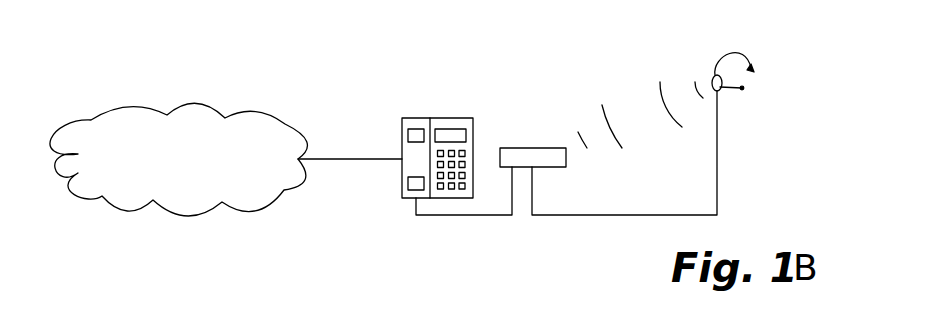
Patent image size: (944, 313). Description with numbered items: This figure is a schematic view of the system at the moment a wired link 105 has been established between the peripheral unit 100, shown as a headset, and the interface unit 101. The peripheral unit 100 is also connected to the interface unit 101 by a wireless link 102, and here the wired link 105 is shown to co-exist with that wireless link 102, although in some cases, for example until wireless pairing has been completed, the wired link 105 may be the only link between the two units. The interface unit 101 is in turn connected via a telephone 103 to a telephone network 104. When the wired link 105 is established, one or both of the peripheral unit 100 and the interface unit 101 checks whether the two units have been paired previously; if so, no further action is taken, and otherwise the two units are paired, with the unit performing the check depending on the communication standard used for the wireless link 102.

The peripheral unit 100 is at (767, 61).
The interface unit 101 is at (521, 158).
The wireless link 102 is at (617, 124).
The telephone 103 is at (430, 118).
The telephone network 104 is at (180, 160).
The wired link 105 is at (717, 180).